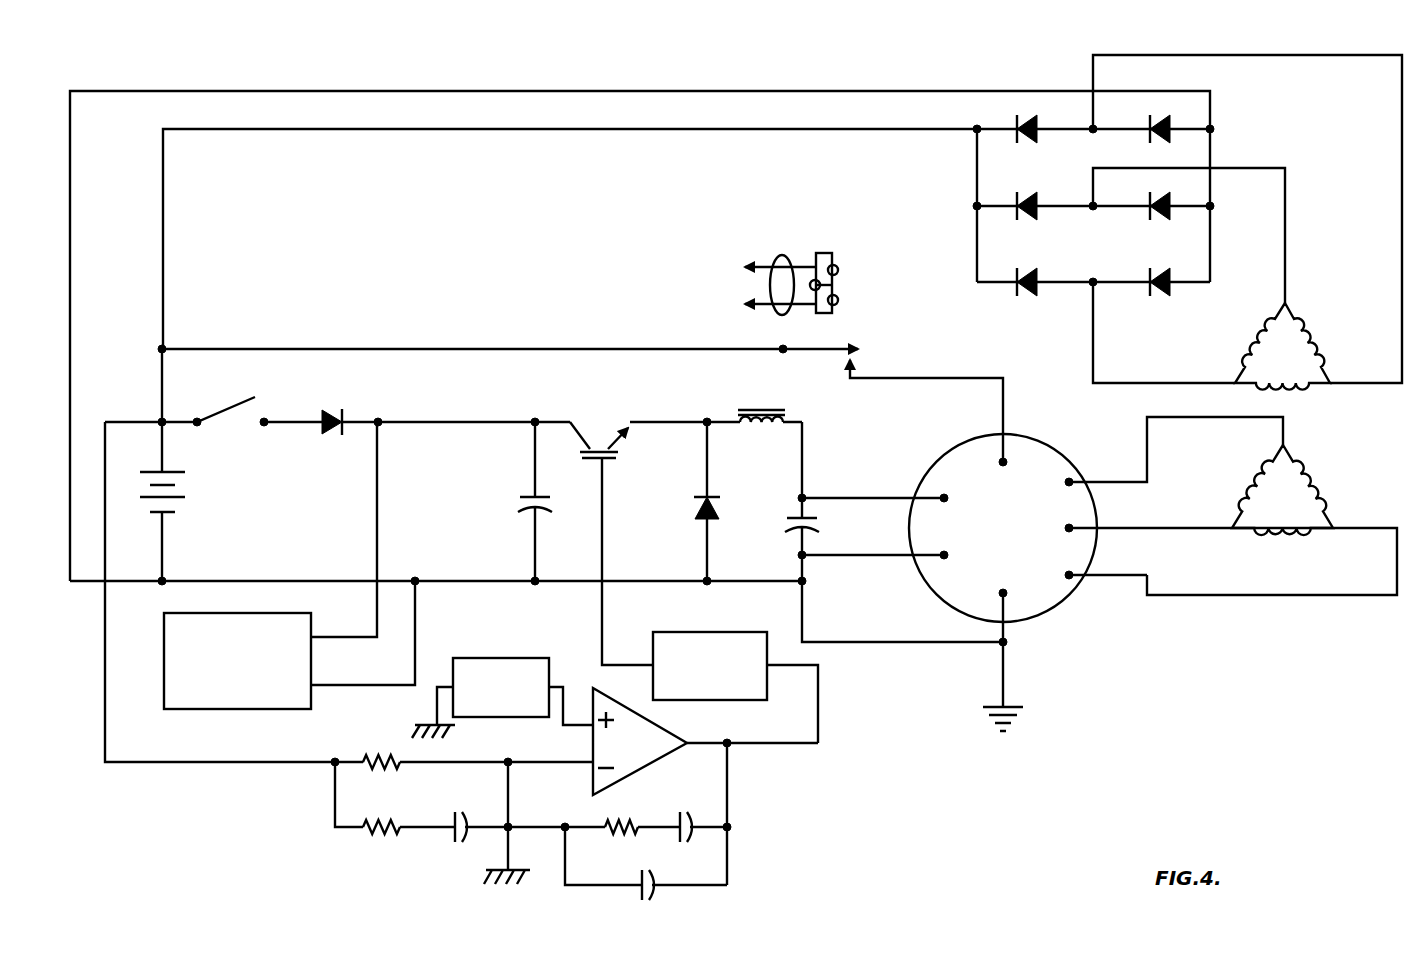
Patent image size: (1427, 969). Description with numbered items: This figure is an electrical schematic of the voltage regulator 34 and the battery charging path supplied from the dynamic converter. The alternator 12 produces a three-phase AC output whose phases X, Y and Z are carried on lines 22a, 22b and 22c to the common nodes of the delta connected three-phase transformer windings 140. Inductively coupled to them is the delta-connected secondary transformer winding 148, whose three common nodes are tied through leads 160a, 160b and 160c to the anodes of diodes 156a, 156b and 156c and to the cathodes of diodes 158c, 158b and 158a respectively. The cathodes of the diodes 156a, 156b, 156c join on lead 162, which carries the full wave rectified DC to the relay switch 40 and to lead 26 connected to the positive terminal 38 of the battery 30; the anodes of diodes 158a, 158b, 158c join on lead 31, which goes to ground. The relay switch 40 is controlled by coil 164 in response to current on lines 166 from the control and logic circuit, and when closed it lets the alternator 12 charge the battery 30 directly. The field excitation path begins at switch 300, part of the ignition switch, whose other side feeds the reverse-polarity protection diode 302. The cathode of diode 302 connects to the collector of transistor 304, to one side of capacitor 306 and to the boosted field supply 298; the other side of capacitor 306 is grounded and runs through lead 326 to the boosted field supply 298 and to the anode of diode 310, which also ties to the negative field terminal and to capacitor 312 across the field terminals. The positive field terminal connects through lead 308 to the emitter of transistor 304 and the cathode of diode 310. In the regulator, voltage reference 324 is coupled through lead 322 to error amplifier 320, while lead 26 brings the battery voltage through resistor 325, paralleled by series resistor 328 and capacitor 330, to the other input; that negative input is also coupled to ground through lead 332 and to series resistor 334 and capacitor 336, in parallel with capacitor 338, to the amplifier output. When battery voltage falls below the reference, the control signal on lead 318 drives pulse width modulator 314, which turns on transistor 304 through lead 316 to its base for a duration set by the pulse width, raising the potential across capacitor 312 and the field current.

The alternator 12 is at (1050, 612).
The line 22a is at (1148, 462).
The line 22b is at (1195, 528).
The line 22c is at (1200, 595).
The lead 26 is at (162, 385).
The battery 30 is at (175, 498).
The lead 31 is at (712, 91).
The voltage regulator 34 is at (888, 840).
The positive terminal 38 is at (928, 382).
The relay switch 40 is at (818, 354).
The delta connected three-phase transformer windings 140 is at (1348, 483).
The delta-connected secondary transformer winding 148 is at (1322, 322).
The diode 156a is at (1010, 209).
The diode 156b is at (1030, 118).
The diode 156c is at (1010, 290).
The diode 158a is at (1176, 279).
The diode 158b is at (1176, 126).
The diode 158c is at (1176, 204).
The lead 160a is at (1285, 232).
The lead 160b is at (1383, 385).
The lead 160c is at (1093, 350).
The lead 162 is at (800, 129).
The coil 164 is at (824, 252).
The lines 166 is at (782, 257).
The boosted field supply 298 is at (170, 709).
The switch 300 is at (238, 404).
The diode 302 is at (340, 412).
The transistor 304 is at (612, 458).
The capacitor 306 is at (523, 500).
The lead 308 is at (663, 422).
The diode 310 is at (700, 520).
The capacitor 312 is at (790, 520).
The pulse width modulator 314 is at (757, 700).
The lead 316 is at (602, 605).
The lead 318 is at (818, 707).
The error amplifier 320 is at (655, 760).
The lead 322 is at (563, 686).
The voltage reference 324 is at (488, 658).
The resistor 325 is at (380, 755).
The lead 326 is at (415, 662).
The resistor 328 is at (364, 842).
The capacitor 330 is at (446, 840).
The lead 332 is at (508, 793).
The resistor 334 is at (600, 825).
The capacitor 336 is at (697, 835).
The capacitor 338 is at (641, 878).